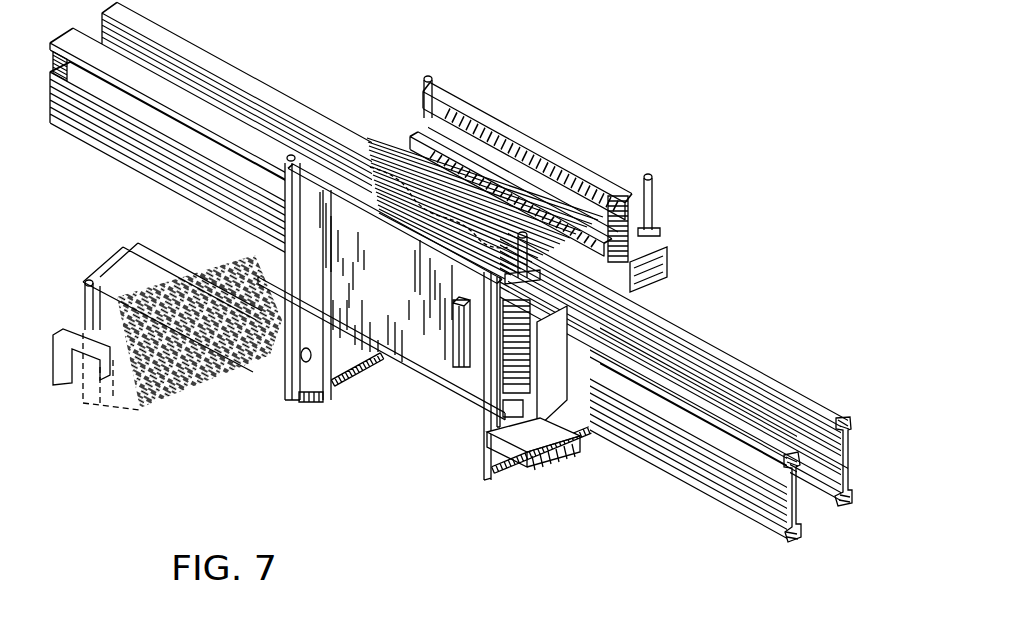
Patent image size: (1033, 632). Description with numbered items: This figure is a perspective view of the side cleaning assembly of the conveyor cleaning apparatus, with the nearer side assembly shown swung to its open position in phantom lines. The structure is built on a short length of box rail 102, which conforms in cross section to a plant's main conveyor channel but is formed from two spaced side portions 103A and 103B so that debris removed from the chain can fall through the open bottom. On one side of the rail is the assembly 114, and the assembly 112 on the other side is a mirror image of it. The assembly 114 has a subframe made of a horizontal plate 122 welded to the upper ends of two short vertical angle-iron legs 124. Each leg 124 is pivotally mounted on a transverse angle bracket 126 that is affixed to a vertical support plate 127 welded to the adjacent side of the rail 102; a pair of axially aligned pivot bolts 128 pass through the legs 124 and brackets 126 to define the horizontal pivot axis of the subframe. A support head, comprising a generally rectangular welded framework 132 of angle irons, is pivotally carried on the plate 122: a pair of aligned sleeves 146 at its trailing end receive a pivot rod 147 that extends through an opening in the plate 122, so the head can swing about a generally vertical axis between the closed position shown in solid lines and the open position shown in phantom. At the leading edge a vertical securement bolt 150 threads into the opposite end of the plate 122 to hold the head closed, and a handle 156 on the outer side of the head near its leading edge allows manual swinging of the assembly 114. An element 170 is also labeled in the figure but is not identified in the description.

The box rail 102 is at (627, 360).
The side portion 103A is at (727, 350).
The side portion 103B is at (727, 507).
The assembly 112 is at (464, 97).
The assembly 114 is at (308, 428).
The horizontal plate 122 is at (422, 378).
The vertical angle-iron legs 124 is at (292, 388).
The transverse angle bracket 126 is at (232, 372).
The vertical support plate 127 is at (590, 432).
The pivot bolts 128 is at (507, 440).
The framework 132 is at (403, 228).
The sleeves 146 is at (283, 196).
The pivot rod 147 is at (276, 250).
The securement bolt 150 is at (458, 364).
The handle 156 is at (452, 333).
The threaded rod 170 is at (358, 366).